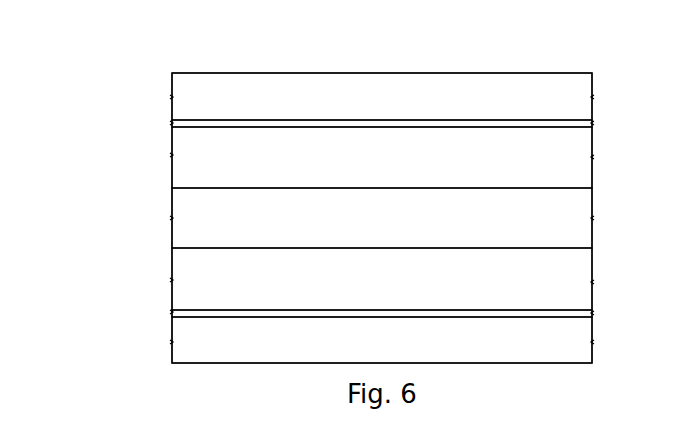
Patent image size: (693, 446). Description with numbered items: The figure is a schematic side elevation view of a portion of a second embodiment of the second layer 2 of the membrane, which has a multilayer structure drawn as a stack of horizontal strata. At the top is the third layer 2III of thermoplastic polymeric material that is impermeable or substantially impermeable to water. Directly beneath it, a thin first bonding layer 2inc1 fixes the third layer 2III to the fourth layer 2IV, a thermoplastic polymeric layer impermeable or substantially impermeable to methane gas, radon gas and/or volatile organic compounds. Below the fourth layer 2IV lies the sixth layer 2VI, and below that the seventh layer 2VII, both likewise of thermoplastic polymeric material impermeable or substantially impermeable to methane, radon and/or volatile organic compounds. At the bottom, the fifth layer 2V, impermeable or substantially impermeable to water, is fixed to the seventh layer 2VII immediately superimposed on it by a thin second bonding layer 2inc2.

The second layer 2 is at (390, 70).
The third layer 2III is at (475, 78).
The first bonding layer 2inc1 is at (243, 123).
The fourth layer 2IV is at (203, 157).
The sixth layer 2VI is at (568, 213).
The seventh layer 2VII is at (202, 277).
The second bonding layer 2inc2 is at (213, 315).
The fifth layer 2V is at (569, 352).